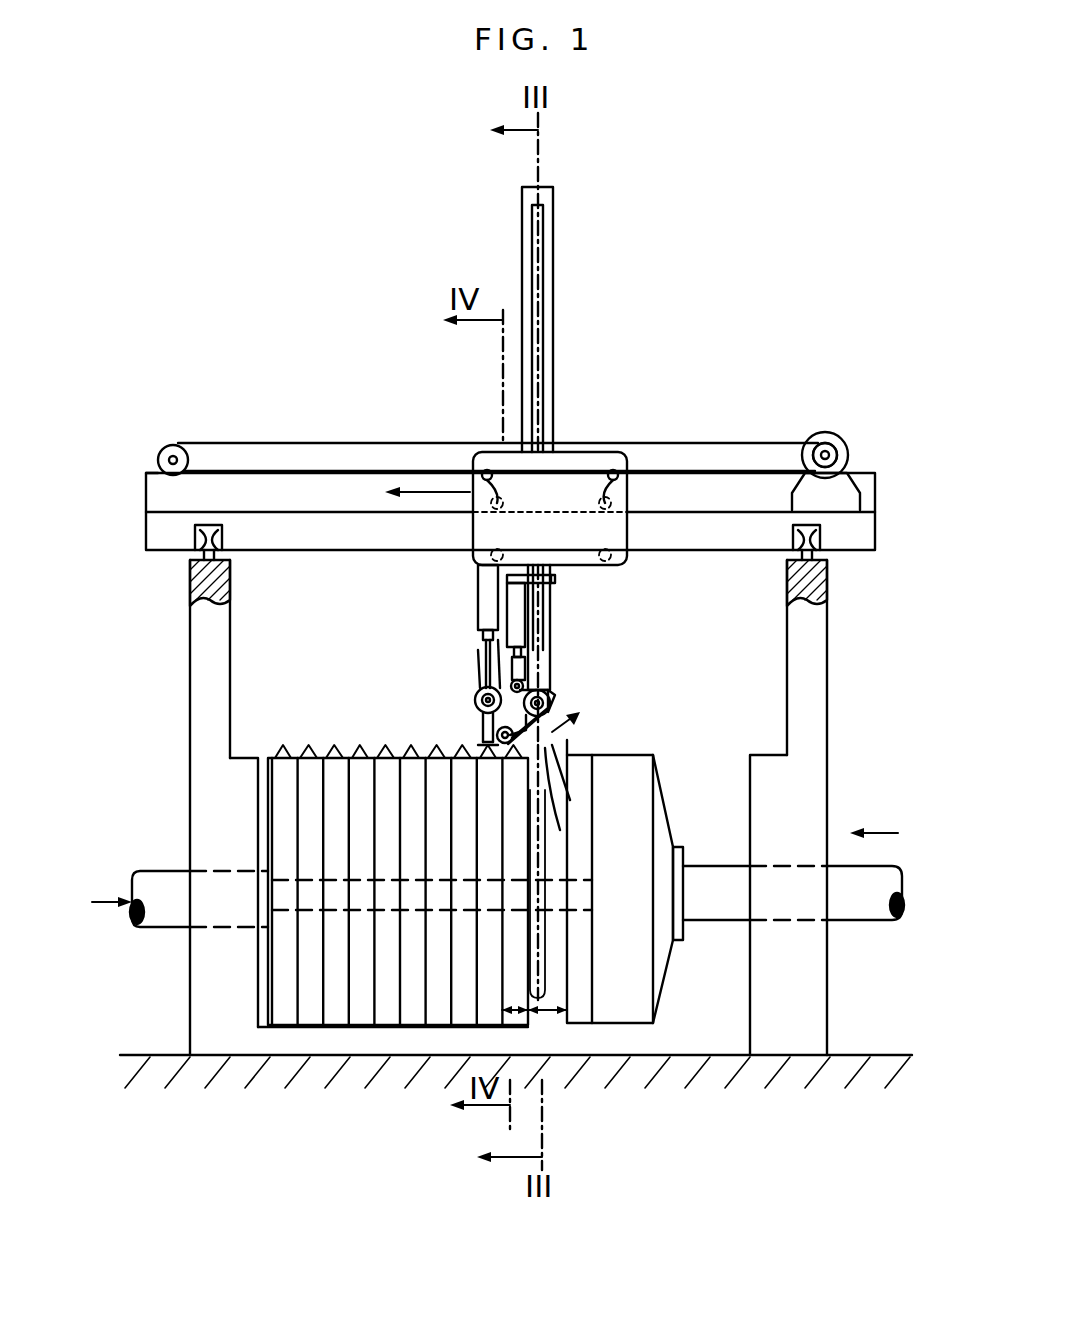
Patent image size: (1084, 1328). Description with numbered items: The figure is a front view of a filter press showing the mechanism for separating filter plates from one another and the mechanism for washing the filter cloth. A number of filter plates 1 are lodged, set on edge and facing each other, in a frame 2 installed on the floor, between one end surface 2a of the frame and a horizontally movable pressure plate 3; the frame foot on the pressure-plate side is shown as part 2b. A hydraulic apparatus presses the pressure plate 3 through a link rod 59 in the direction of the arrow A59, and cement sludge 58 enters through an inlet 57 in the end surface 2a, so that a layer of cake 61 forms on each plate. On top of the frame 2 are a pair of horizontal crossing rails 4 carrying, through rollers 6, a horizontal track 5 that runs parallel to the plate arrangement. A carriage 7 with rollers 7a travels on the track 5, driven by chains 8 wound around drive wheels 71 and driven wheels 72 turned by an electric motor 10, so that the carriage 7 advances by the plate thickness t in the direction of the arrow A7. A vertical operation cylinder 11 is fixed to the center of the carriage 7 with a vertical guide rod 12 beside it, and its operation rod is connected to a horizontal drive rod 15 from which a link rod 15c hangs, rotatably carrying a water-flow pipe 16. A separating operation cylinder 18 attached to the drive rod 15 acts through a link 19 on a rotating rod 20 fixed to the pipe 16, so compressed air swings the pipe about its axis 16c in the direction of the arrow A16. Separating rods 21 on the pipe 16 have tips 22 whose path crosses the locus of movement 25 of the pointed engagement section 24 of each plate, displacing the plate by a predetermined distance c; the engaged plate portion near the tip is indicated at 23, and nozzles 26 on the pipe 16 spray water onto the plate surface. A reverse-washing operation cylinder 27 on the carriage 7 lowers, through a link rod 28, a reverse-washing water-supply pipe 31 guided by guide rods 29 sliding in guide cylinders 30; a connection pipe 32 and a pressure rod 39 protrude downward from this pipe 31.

The filter plate 1 is at (300, 760).
The frame 2 is at (190, 975).
The end surface of the frame 2a is at (190, 762).
The frame pedestal 2b is at (785, 1057).
The pressure plate 3 is at (640, 1025).
The horizontal crossing rail 4 is at (190, 598).
The horizontal track 5 is at (320, 510).
The roller 6 is at (198, 538).
The carriage 7 is at (568, 450).
The roller 7a is at (600, 450).
The chain 8 is at (678, 443).
The electric motor 10 is at (845, 445).
The vertical operation cylinder 11 is at (553, 200).
The vertical guide rod 12 is at (544, 233).
The horizontal drive rod 15 is at (555, 579).
The link rod 15c is at (555, 595).
The water-flow pipe 16 is at (552, 700).
The axis of the water-flow pipe 16c is at (553, 705).
The separating operation cylinder 18 is at (525, 612).
The link 19 is at (525, 680).
The rotating rod 20 is at (552, 695).
The separating rod 21 is at (486, 676).
The tip of the separating rod 22 is at (540, 748).
The blade holder 23 is at (570, 775).
The pointed engagement section 24 is at (345, 752).
The locus of movement 25 is at (540, 748).
The nozzle 26 is at (545, 718).
The reverse-washing operation cylinder 27 is at (478, 595).
The link rod 28 is at (478, 660).
The reverse-washing guide rod 29 is at (484, 618).
The guide cylinder 30 is at (482, 690).
The reverse-washing water-supply pipe 31 is at (475, 700).
The connection pipe 32 is at (497, 735).
The pressure rod 39 is at (482, 745).
The inlet 57 is at (150, 868).
The sludge 58 is at (105, 905).
The link rod 59 is at (705, 922).
The cake 61 is at (540, 975).
The drive wheel 71 is at (815, 445).
The driven wheel 72 is at (195, 445).
The direction of carriage movement A7 is at (405, 500).
The swinging direction of the water-flow pipe A16 is at (638, 731).
The pressing direction of the pressure plate A59 is at (882, 800).
The thickness of the filter plate t is at (514, 1012).
The predetermined distance c is at (548, 1012).